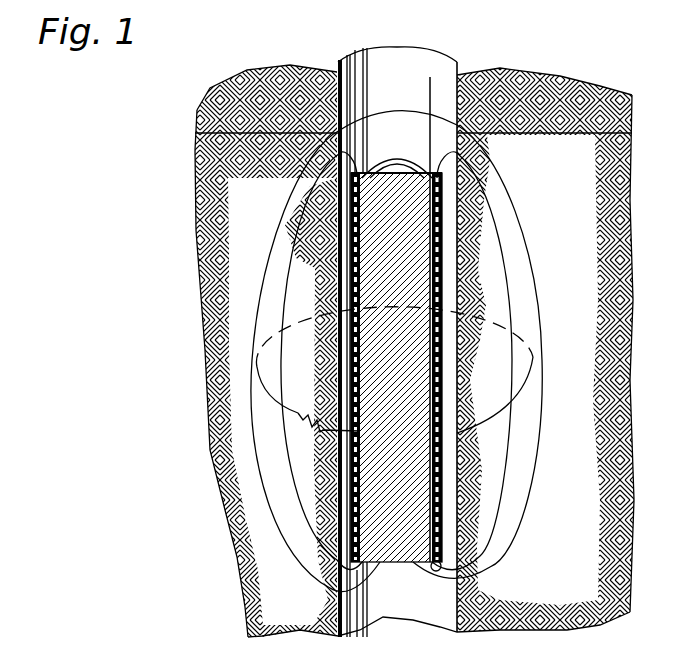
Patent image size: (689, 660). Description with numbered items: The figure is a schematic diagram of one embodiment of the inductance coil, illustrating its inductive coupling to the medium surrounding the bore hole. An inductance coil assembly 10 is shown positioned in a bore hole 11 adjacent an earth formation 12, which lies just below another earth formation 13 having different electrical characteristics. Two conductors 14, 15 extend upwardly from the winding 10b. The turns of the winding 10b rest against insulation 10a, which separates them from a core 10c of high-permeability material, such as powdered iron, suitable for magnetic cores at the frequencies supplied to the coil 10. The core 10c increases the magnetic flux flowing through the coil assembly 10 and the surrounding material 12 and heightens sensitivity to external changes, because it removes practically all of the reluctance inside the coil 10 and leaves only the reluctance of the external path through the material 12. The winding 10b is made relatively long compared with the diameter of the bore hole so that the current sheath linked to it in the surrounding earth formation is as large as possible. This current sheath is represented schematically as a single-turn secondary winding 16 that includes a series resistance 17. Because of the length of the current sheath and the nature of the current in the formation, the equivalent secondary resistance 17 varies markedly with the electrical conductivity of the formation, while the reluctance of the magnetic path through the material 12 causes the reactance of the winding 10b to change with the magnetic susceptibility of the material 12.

The inductance coil assembly 10 is at (351, 288).
The insulation 10a is at (445, 193).
The winding 10b is at (447, 270).
The core 10c is at (408, 456).
The bore hole 11 is at (370, 63).
The earth formation 12 is at (632, 378).
The earth formation 13 is at (618, 123).
The conductor 14 is at (356, 108).
The conductor 15 is at (430, 93).
The single-turn secondary winding 16 is at (277, 405).
The series resistance 17 is at (316, 433).